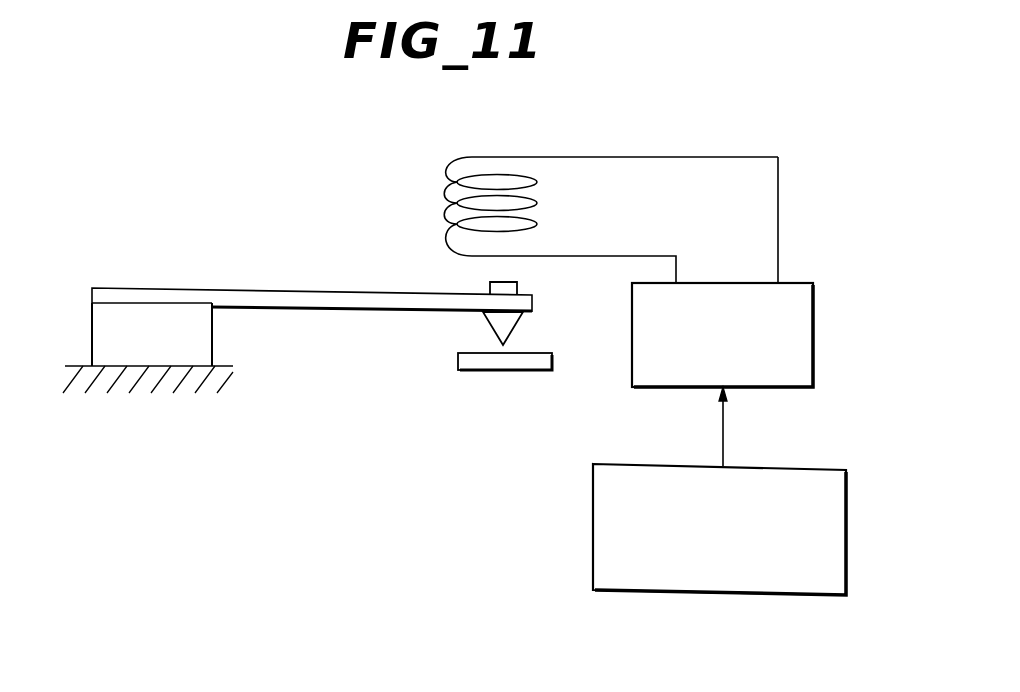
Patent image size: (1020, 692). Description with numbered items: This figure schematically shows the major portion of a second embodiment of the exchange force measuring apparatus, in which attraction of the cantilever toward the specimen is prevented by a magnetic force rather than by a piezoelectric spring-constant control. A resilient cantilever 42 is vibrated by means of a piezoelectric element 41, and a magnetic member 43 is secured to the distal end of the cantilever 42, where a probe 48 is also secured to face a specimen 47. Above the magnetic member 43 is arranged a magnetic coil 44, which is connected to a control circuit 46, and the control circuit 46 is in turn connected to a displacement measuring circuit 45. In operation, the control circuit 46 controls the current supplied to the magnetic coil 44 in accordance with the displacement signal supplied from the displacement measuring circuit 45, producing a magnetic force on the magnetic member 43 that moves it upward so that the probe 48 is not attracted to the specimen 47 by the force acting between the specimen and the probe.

The piezoelectric element 41 is at (188, 330).
The resilient cantilever 42 is at (298, 293).
The magnetic member 43 is at (490, 285).
The magnetic coil 44 is at (475, 173).
The displacement measuring circuit 45 is at (847, 512).
The control circuit 46 is at (815, 353).
The specimen 47 is at (495, 372).
The probe 48 is at (486, 328).